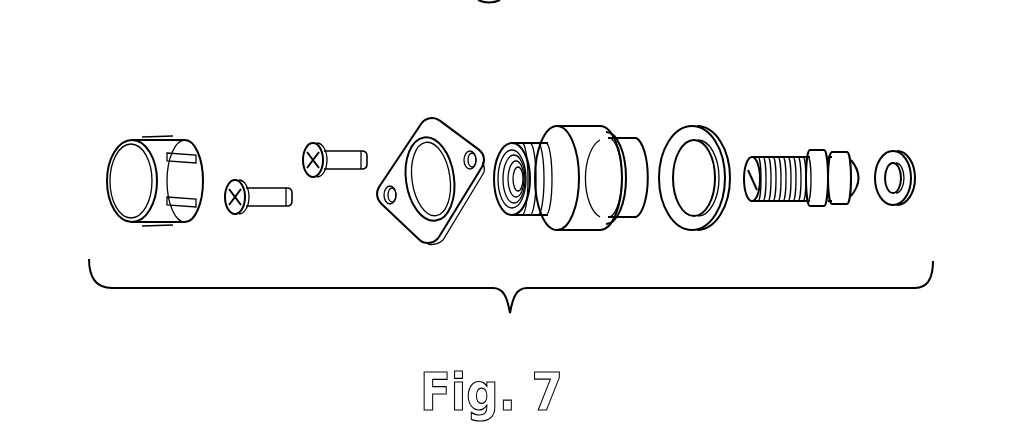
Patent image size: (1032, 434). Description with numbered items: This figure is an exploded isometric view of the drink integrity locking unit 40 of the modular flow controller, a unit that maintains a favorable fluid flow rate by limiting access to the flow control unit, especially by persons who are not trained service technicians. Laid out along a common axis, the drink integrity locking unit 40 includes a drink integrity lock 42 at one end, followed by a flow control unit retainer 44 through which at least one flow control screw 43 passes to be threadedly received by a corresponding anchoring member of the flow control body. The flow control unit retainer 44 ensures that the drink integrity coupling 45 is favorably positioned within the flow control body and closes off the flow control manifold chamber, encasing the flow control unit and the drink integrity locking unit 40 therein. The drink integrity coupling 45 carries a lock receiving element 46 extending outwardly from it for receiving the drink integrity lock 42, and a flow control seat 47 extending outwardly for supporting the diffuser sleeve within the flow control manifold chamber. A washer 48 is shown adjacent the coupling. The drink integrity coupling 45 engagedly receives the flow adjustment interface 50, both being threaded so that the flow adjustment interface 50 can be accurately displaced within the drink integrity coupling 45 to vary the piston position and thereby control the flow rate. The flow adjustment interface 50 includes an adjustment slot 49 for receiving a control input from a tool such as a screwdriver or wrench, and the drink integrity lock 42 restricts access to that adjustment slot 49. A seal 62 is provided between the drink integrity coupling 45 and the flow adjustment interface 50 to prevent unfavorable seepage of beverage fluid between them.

The drink integrity locking unit 40 is at (163, 75).
The drink integrity lock 42 is at (140, 192).
The flow control screw 43 is at (300, 153).
The flow control unit retainer 44 is at (425, 125).
The drink integrity coupling 45 is at (578, 135).
The lock receiving element 46 is at (532, 142).
The flow control seat 47 is at (632, 143).
The washer 48 is at (687, 128).
The adjustment slot 49 is at (753, 180).
The flow adjustment interface 50 is at (806, 145).
The seal 62 is at (887, 150).